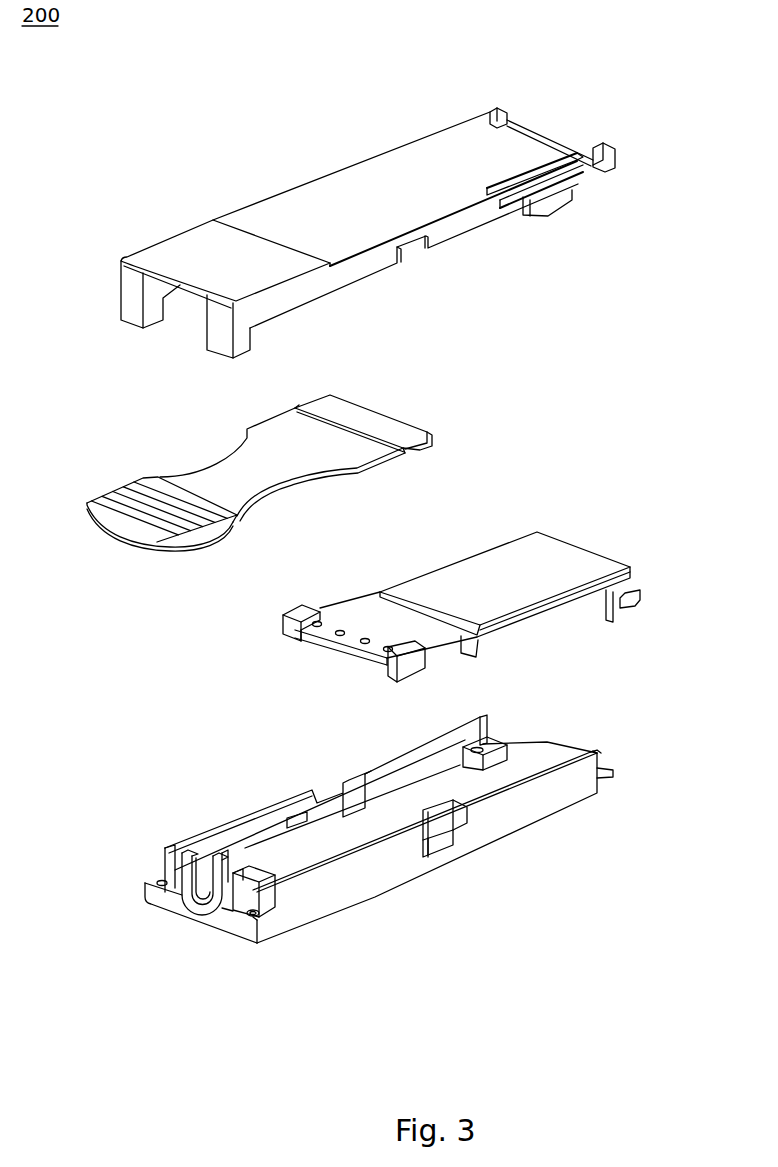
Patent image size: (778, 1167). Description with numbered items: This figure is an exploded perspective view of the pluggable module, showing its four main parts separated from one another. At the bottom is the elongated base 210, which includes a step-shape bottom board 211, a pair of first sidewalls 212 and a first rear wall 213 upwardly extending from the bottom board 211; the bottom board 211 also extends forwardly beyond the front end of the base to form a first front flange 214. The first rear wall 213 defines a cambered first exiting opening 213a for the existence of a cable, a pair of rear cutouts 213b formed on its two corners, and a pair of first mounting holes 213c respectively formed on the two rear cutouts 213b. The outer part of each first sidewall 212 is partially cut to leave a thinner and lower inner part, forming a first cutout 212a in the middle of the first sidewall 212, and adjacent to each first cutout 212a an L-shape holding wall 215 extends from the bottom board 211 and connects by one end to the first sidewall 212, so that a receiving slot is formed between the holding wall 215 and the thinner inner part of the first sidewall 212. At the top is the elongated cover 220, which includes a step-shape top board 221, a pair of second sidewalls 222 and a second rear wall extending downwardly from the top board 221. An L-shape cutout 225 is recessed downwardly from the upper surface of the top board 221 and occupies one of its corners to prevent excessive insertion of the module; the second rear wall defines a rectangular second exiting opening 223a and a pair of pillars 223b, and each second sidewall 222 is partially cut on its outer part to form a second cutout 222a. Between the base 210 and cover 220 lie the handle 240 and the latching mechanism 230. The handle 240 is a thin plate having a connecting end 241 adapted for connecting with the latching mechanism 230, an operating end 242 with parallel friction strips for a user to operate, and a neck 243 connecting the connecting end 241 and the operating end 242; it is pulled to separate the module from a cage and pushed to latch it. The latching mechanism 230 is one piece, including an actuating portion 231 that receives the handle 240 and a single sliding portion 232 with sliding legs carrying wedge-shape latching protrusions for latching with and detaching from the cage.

The base 210 is at (368, 908).
The bottom board 211 is at (332, 853).
The first sidewall 212 is at (292, 797).
The first cutout 212a is at (432, 842).
The first rear wall 213 is at (178, 903).
The first exiting opening 213a is at (204, 894).
The rear cutout 213b is at (158, 882).
The first mounting hole 213c is at (252, 917).
The first front flange 214 is at (603, 776).
The holding wall 215 is at (360, 790).
The cover 220 is at (366, 152).
The top board 221 is at (308, 215).
The second sidewall 222 is at (463, 222).
The second cutout 222a is at (406, 258).
The second exiting opening 223a is at (190, 308).
The pillar 223b is at (133, 283).
The L-shape cutout 225 is at (582, 168).
The latching mechanism 230 is at (636, 553).
The actuating portion 231 is at (366, 622).
The single sliding portion 232 is at (562, 560).
The handle 240 is at (410, 461).
The connecting end 241 is at (370, 428).
The operating end 242 is at (104, 528).
The neck 243 is at (240, 478).